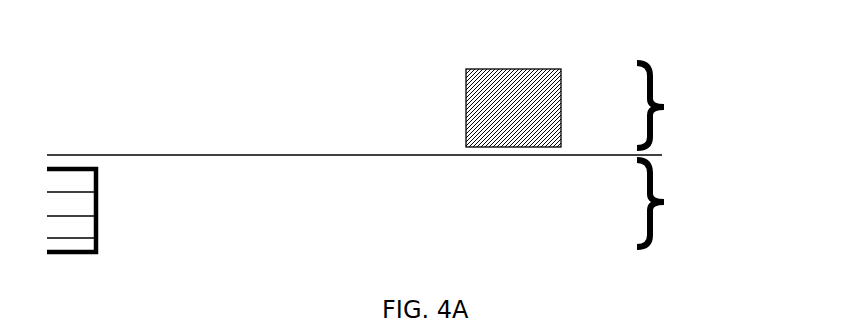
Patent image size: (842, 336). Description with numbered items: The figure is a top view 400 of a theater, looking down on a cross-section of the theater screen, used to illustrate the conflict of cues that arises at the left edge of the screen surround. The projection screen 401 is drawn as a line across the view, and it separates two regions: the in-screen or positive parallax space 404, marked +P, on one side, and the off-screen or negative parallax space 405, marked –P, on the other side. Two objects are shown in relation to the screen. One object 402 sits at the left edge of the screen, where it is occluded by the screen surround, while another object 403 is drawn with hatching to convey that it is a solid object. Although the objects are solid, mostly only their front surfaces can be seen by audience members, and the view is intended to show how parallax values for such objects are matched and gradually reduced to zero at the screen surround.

The top view 400 is at (176, 110).
The projection screen 401 is at (596, 162).
The object 402 is at (98, 203).
The object 403 is at (460, 107).
The positive parallax space 404 is at (660, 72).
The negative parallax space 405 is at (660, 178).